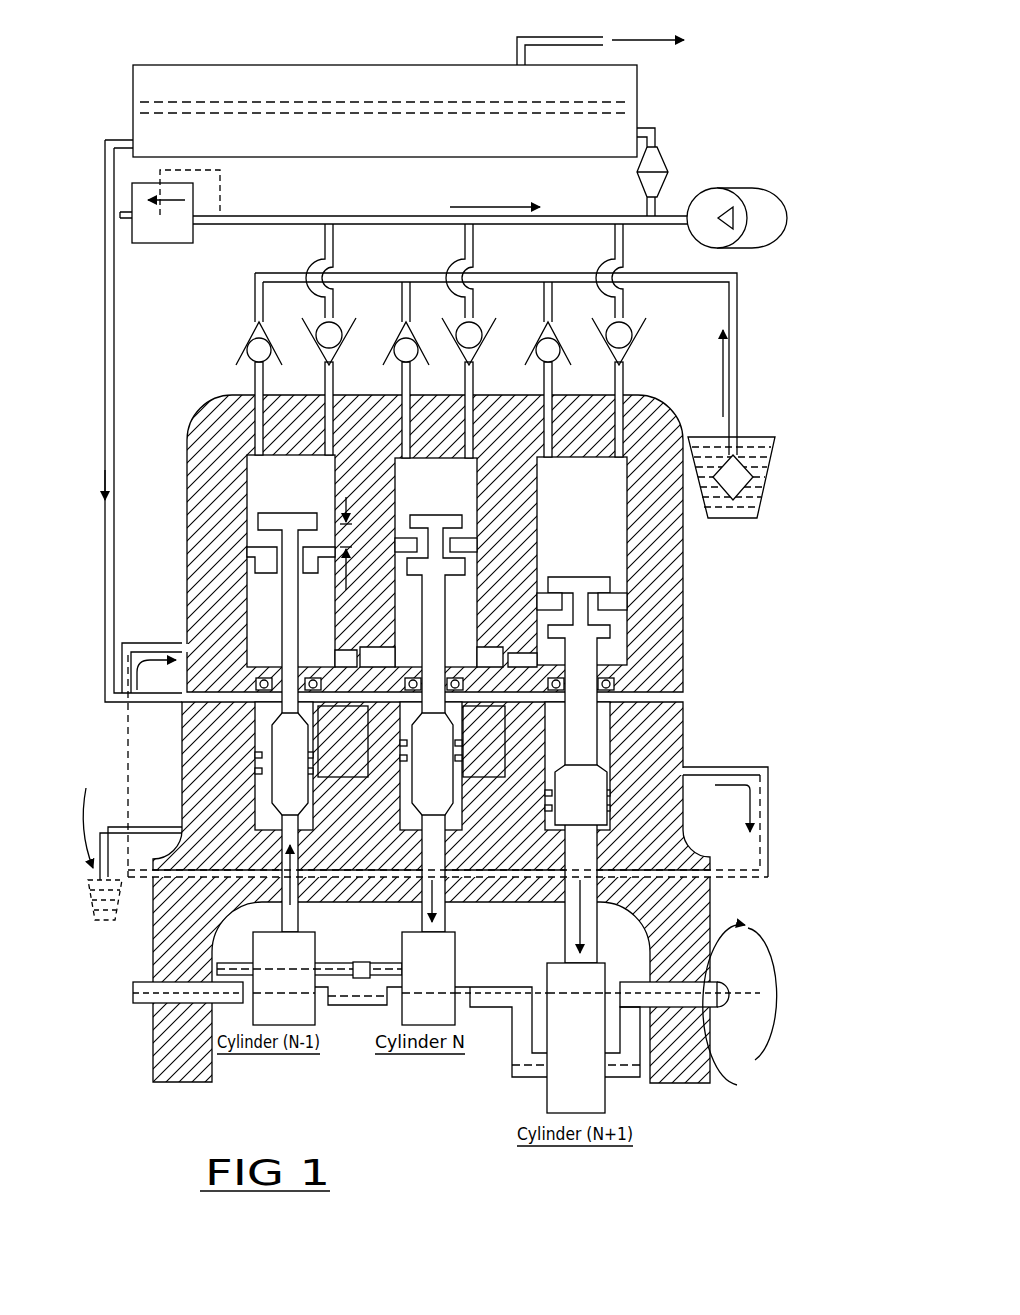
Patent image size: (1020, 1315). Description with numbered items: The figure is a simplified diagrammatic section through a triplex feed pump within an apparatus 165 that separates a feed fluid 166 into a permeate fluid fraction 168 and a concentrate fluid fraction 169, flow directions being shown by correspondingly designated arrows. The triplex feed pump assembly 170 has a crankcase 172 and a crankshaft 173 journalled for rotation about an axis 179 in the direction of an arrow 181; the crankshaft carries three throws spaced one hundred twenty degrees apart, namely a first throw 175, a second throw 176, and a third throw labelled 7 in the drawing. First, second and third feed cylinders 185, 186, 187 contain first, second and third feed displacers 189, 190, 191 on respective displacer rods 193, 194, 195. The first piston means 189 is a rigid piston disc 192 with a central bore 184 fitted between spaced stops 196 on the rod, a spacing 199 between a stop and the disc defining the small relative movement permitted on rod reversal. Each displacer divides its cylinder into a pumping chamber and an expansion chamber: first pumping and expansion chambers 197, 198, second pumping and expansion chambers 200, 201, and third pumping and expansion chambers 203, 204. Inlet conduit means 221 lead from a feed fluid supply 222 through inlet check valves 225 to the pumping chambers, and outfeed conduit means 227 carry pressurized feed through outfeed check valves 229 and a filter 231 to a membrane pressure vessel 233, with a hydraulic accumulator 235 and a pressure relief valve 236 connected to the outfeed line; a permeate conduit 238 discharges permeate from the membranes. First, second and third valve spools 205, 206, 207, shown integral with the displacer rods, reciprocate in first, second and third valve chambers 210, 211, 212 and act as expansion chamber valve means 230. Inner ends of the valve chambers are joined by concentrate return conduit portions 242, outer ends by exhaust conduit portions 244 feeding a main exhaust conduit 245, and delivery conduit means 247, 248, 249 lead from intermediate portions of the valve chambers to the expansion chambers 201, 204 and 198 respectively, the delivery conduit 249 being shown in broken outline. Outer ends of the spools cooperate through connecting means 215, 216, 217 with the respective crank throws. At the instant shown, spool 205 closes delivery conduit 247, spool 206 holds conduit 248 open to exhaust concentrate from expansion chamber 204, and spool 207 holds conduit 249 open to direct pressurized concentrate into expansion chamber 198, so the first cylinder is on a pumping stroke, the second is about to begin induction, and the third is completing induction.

The apparatus 165 is at (220, 62).
The membrane pressure vessel 233 is at (300, 80).
The permeate conduit 238 is at (545, 38).
The permeate fluid fraction 168 is at (618, 42).
The filter 231 is at (652, 162).
The hydraulic accumulator 235 is at (707, 205).
The outfeed conduit means 227 is at (568, 214).
The pressure relief valve 236 is at (190, 237).
The inlet conduit means 221 is at (635, 276).
The inlet check valves 225 is at (255, 335).
The outfeed check valves 229 is at (329, 324).
The triplex feed pump assembly 170 is at (645, 382).
The crankcase 172 is at (645, 425).
The feed fluid 166 is at (710, 390).
The second feed cylinder 186 is at (466, 468).
The first feed cylinder 185 is at (262, 480).
The first pumping chamber 197 is at (320, 487).
The spacing 199 is at (347, 495).
The second pumping chamber 200 is at (463, 505).
The second feed piston means 190 is at (446, 522).
The stops 196 is at (262, 525).
The rigid piston disc 192 is at (263, 545).
The first feed piston means 189 is at (235, 552).
The central bore 184 is at (366, 572).
The third pumping chamber 203 is at (602, 545).
The third feed cylinder 187 is at (606, 510).
The feed fluid supply 222 is at (745, 522).
The third feed piston means 191 is at (592, 618).
The first displacer rod 193 is at (292, 612).
The second displacer rod 194 is at (425, 602).
The first expansion chamber 198 is at (252, 635).
The second expansion chamber 201 is at (405, 637).
The concentrate return conduit portions 242 is at (478, 682).
The delivery conduit means 249 is at (175, 643).
The third expansion chamber 204 is at (612, 652).
The expansion chamber valve means 230 is at (155, 752).
The first valve spool 205 is at (280, 768).
The delivery conduit means 247 is at (404, 742).
The third displacer rod 195 is at (587, 722).
The delivery conduit means 248 is at (505, 748).
The first valve chamber 210 is at (275, 808).
The second valve spool 206 is at (397, 780).
The main exhaust conduit 245 is at (170, 830).
The concentrate fluid fraction 169 is at (103, 850).
The second valve chamber 211 is at (400, 815).
The third valve chamber 212 is at (545, 770).
The third valve spool 207 is at (568, 815).
The exhaust conduit portions 244 is at (350, 835).
The crankshaft 173 is at (152, 982).
The axis 179 is at (150, 1005).
The connecting means 215 is at (285, 952).
The first crank throw 175 is at (316, 965).
The connecting means 216 is at (440, 950).
The second crank throw 176 is at (471, 965).
The connecting means 217 is at (585, 985).
The cam 7 is at (532, 1077).
The arrow 181 is at (735, 1086).